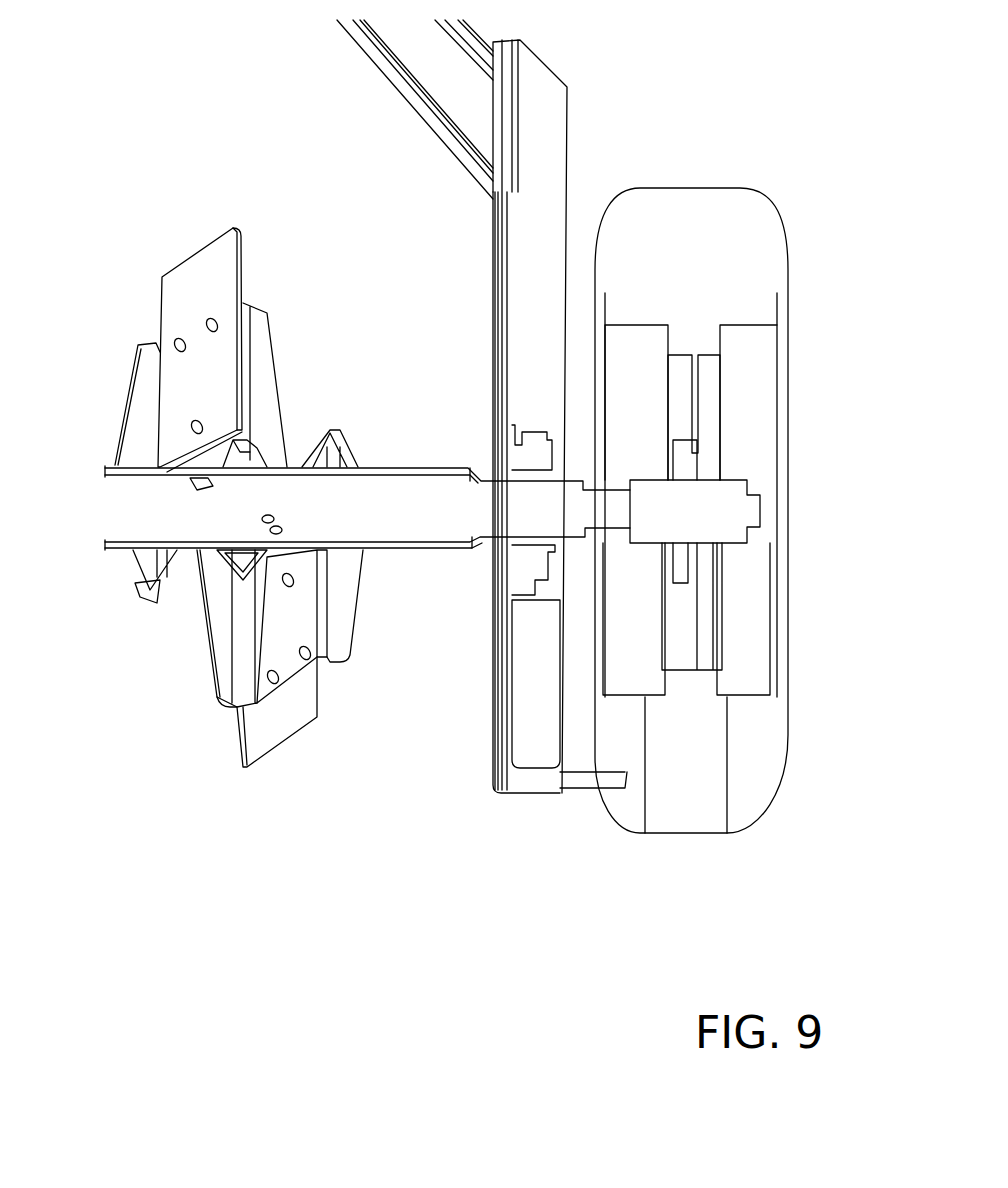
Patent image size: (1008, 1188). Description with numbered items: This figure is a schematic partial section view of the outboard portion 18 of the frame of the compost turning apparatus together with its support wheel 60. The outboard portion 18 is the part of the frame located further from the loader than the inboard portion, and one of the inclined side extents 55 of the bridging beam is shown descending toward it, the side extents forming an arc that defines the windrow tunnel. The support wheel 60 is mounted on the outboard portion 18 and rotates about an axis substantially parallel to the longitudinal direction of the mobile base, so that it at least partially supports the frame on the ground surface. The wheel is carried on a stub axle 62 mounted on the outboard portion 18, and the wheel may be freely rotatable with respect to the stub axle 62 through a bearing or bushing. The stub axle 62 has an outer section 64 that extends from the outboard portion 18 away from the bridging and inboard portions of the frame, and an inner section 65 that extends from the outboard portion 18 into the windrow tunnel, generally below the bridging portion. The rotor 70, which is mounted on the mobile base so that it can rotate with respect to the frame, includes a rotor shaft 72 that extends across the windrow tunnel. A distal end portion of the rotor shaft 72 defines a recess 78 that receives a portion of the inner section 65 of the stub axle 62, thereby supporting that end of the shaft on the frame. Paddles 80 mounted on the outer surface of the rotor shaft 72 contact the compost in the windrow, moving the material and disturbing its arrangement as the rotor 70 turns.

The outboard portion 18 is at (540, 147).
The side extent 55 is at (457, 83).
The support wheel 60 is at (741, 240).
The stub axle 62 is at (486, 540).
The outer section 64 is at (753, 487).
The inner section 65 is at (420, 515).
The rotor 70 is at (136, 240).
The rotor shaft 72 is at (192, 552).
The recess 78 is at (389, 547).
The paddle 80 is at (208, 268).